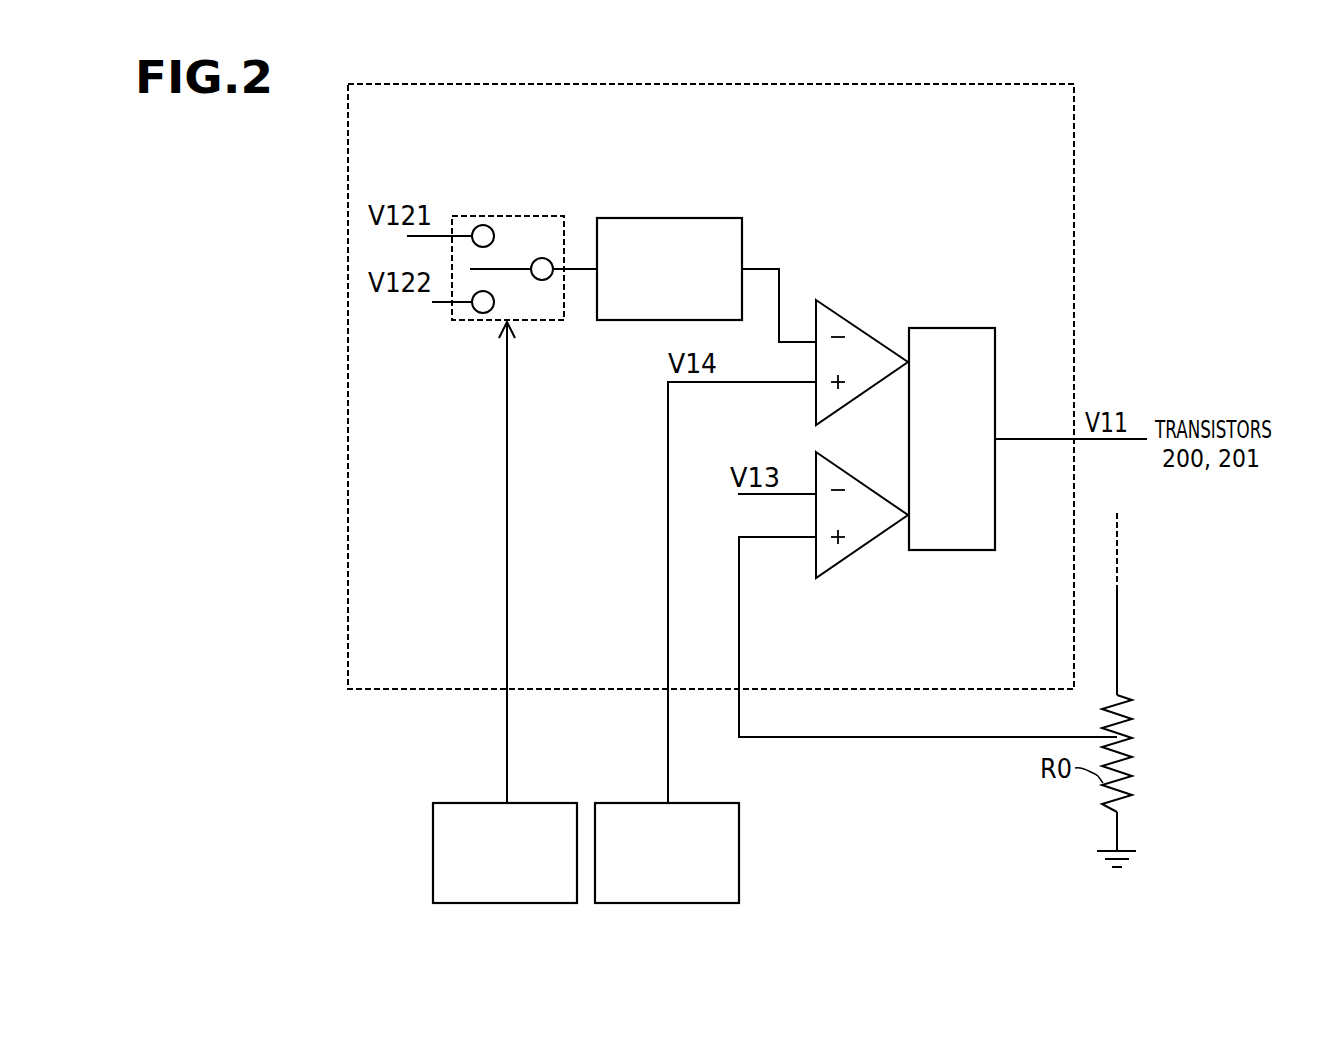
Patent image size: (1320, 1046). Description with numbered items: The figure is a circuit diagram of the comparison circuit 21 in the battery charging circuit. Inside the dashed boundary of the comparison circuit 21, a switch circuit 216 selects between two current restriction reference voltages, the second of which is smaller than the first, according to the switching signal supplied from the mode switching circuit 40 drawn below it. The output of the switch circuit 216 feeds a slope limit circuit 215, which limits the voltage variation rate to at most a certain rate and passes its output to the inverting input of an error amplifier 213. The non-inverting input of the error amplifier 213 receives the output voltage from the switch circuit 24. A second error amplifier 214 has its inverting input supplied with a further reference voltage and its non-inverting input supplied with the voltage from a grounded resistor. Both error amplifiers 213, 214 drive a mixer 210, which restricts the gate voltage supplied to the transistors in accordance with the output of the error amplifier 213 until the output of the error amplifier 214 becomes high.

The comparison circuit 21 is at (985, 86).
The switch circuit 216 is at (518, 216).
The slope limit circuit 215 is at (696, 218).
The error amplifier 213 is at (848, 316).
The error amplifier 214 is at (870, 485).
The mixer 210 is at (942, 327).
The mode switching circuit 40 is at (530, 802).
The switch circuit 24 is at (690, 802).